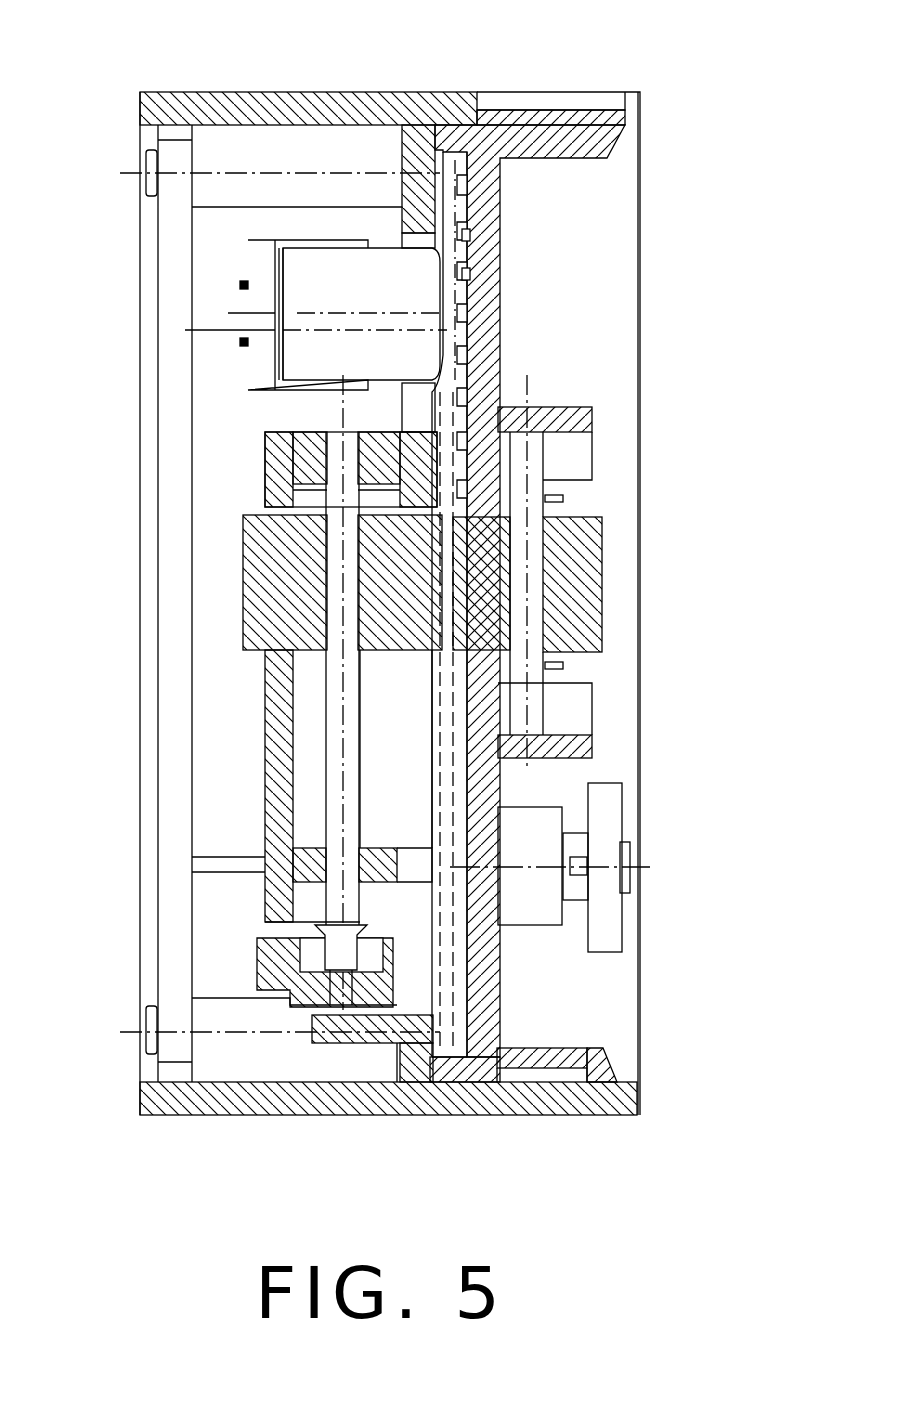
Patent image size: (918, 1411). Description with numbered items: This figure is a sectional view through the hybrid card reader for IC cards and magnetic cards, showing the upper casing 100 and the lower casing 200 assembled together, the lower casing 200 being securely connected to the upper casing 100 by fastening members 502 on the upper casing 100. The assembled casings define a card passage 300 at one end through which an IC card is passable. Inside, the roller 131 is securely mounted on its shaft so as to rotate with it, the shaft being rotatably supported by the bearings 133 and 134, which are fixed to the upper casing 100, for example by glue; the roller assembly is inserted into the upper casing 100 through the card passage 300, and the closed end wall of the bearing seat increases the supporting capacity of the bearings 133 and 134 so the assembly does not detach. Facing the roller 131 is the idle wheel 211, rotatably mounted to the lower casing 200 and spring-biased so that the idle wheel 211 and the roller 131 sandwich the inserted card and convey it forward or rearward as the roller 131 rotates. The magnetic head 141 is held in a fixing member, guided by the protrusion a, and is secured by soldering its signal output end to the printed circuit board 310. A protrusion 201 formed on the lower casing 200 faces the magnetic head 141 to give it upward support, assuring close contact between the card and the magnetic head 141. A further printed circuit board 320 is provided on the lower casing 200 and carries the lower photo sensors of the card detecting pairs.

The upper casing 100 is at (405, 92).
The fastening members 502 is at (607, 114).
The lower casing 200 is at (630, 332).
The protrusion 201 is at (470, 276).
The card passage 300 is at (457, 978).
The printed circuit board 310 is at (165, 760).
The protrusion a is at (275, 260).
The magnetic head 141 is at (292, 360).
The bearing 133 is at (290, 490).
The roller 131 is at (243, 585).
The bearing 134 is at (293, 870).
The idle wheel 211 is at (588, 578).
The printed circuit board 320 is at (610, 812).